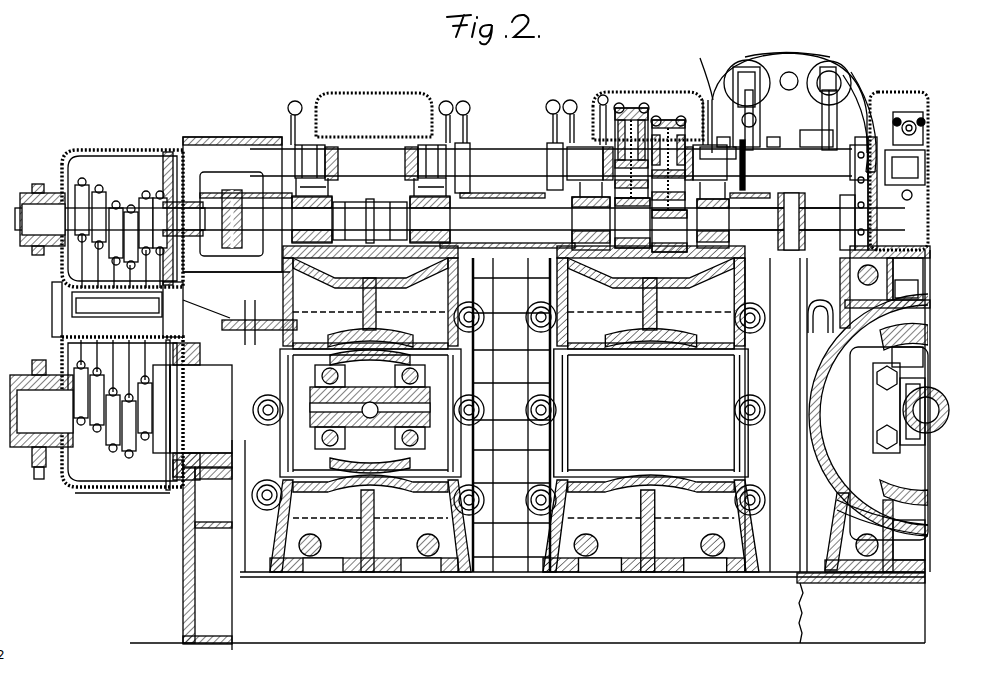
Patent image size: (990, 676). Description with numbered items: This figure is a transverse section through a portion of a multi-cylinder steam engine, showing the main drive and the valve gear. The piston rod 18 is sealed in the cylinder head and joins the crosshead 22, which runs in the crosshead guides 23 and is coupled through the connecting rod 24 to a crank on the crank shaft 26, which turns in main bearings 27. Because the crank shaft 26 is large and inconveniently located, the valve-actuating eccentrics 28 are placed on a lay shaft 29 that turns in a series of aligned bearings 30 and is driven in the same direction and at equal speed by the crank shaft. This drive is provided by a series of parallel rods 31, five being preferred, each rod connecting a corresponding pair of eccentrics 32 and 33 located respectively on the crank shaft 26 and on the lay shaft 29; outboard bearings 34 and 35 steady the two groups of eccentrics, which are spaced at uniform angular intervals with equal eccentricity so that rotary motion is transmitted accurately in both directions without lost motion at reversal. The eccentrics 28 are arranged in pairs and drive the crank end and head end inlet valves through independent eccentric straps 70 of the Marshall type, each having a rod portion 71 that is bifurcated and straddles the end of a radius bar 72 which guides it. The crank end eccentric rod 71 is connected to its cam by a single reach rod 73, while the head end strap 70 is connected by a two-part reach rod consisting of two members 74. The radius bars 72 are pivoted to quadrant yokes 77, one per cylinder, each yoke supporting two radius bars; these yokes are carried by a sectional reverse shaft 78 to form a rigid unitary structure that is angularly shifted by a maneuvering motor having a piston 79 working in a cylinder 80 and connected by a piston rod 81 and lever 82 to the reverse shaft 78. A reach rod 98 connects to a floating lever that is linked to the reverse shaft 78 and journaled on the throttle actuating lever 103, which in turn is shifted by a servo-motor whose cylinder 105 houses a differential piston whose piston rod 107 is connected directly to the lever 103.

The piston rod 18 is at (930, 412).
The crosshead 22 is at (405, 350).
The crosshead guides 23 is at (345, 495).
The connecting rod 24 is at (416, 380).
The crank shaft 26 is at (199, 415).
The main bearings 27 is at (175, 472).
The valve-actuating eccentrics 28 is at (392, 233).
The lay shaft 29 is at (258, 288).
The bearings 30 is at (320, 197).
The parallel rods 31 is at (100, 270).
The eccentrics 32 is at (118, 428).
The eccentrics 33 is at (104, 210).
The outboard bearing 34 is at (30, 376).
The outboard bearing 35 is at (40, 210).
The eccentric straps 70 is at (640, 245).
The rod portion 71 is at (612, 140).
The radius bar 72 is at (652, 148).
The reach rod 73 is at (633, 108).
The reach rod members 74 is at (704, 110).
The quadrant yoke 77 is at (336, 146).
The reverse shaft 78 is at (386, 170).
The piston 79 is at (846, 76).
The cylinder 80 is at (830, 70).
The piston rod 81 is at (822, 68).
The lever 82 is at (824, 114).
The reach rod 98 is at (757, 121).
The throttle actuating lever 103 is at (787, 91).
The cylinder 105 is at (748, 62).
The piston rod 107 is at (738, 110).